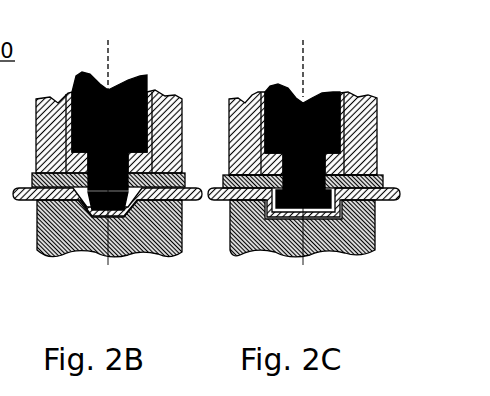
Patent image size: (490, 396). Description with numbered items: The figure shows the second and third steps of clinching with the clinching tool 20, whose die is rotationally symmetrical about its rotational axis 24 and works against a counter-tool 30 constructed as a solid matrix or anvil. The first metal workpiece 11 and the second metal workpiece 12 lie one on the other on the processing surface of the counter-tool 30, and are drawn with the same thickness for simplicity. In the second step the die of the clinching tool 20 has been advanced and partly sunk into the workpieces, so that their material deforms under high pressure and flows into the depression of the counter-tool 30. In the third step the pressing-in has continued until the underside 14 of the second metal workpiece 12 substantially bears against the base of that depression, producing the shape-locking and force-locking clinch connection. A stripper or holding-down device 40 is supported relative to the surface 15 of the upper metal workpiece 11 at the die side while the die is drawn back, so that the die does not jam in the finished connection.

In FIG. 2B, the clinching tool 20 is at (144, 78).
In FIG. 2C, the clinching tool 20 is at (328, 85).
In FIG. 2B, the rotational axis 24 is at (110, 40).
In FIG. 2C, the rotational axis 24 is at (305, 40).
In FIG. 2B, the first metal workpiece 11 is at (32, 180).
In FIG. 2C, the first metal workpiece 11 is at (223, 178).
In FIG. 2B, the second metal workpiece 12 is at (22, 195).
In FIG. 2C, the second metal workpiece 12 is at (220, 195).
In FIG. 2C, the underside of the second metal workpiece 14 is at (318, 226).
In FIG. 2C, the surface of the upper metal workpiece 15 is at (385, 176).
In FIG. 2B, the counter-tool 30 is at (72, 242).
In FIG. 2C, the counter-tool 30 is at (272, 242).
In FIG. 2C, the stripper or holding-down device 40 is at (363, 139).